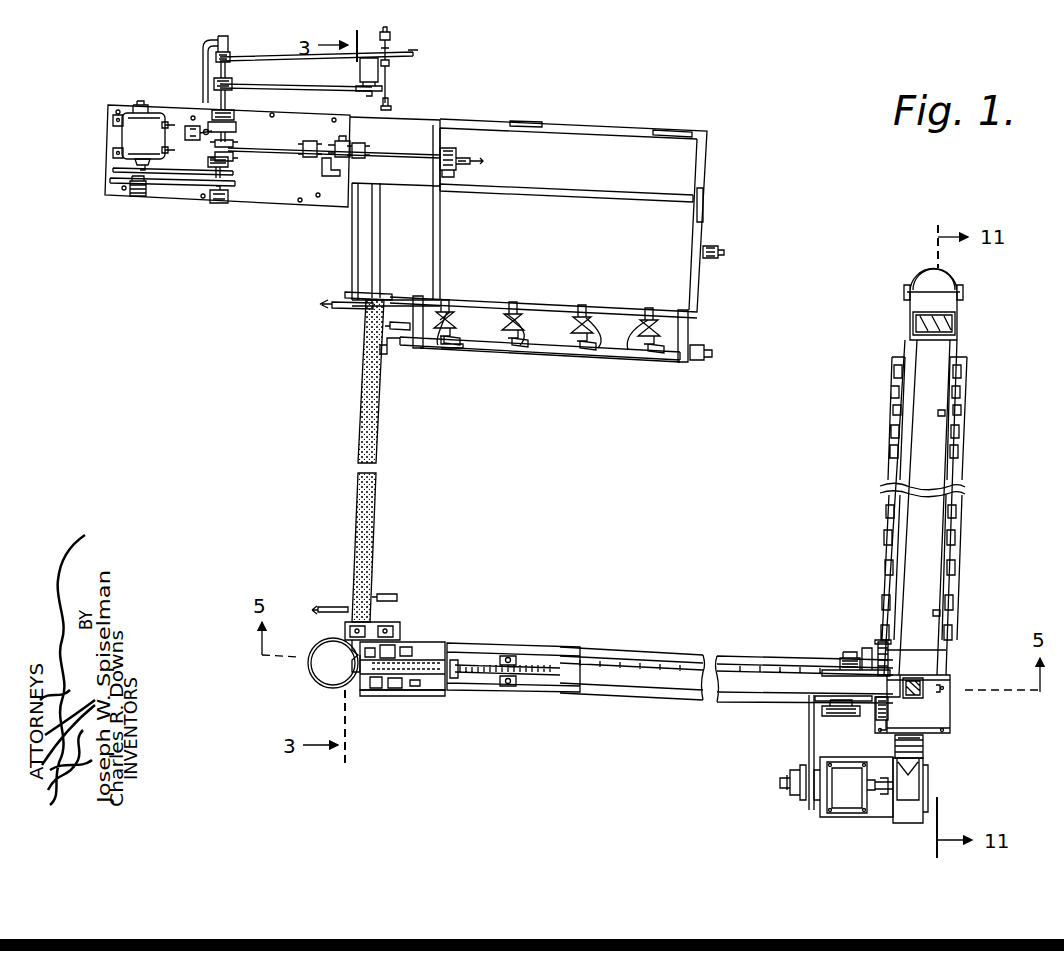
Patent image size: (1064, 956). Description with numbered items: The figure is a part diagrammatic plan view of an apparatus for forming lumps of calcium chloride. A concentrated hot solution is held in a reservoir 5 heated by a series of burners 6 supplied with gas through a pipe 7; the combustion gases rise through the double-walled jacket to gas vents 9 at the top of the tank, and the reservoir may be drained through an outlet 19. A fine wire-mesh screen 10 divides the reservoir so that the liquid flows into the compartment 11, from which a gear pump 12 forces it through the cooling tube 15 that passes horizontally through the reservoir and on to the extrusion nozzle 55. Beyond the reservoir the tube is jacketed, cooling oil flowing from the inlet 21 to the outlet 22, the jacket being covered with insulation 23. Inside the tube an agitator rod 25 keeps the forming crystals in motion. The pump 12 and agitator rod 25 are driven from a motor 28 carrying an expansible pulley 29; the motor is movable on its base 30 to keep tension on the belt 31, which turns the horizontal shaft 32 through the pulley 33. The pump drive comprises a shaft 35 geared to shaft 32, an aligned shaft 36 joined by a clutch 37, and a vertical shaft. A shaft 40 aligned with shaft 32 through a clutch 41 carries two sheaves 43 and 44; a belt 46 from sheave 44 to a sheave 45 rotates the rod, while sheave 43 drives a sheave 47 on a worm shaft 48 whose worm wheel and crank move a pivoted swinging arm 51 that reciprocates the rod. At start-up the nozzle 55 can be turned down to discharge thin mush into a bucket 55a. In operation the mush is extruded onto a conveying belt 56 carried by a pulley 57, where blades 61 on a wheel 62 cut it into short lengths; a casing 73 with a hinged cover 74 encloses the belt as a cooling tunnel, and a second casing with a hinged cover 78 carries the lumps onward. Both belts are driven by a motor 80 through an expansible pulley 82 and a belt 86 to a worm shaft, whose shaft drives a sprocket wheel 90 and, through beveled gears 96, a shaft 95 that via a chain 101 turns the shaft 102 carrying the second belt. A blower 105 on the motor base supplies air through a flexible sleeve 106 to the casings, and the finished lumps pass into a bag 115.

The reservoir 5 is at (622, 120).
The burners 6 is at (644, 312).
The pipe 7 is at (668, 352).
The gas vents 9 is at (548, 122).
The screen 10 is at (656, 186).
The compartment 11 is at (568, 165).
The pump 12 is at (465, 153).
The cooling tube 15 is at (376, 250).
The outlet 19 is at (722, 260).
The inlet 21 is at (334, 606).
The outlet 22 is at (334, 310).
The insulation 23 is at (377, 482).
The agitator rod 25 is at (390, 102).
The motor 28 is at (122, 135).
The expansible pulley 29 is at (130, 190).
The movable base 30 is at (117, 117).
The belt 31 is at (172, 186).
The horizontal shaft 32 is at (228, 172).
The pulley 33 is at (219, 204).
The shaft 35 is at (285, 154).
The aligned shaft 36 is at (374, 188).
The clutch 37 is at (341, 143).
The shaft 40 is at (223, 108).
The clutch 41 is at (232, 126).
The sheave 43 is at (223, 82).
The sheave 44 is at (223, 54).
The sheave 45 is at (392, 66).
The belt 46 is at (330, 56).
The sheave 47 is at (370, 89).
The worm shaft 48 is at (360, 70).
The pivoted swinging arm 51 is at (392, 37).
The extrusion nozzle 55 is at (433, 650).
The bucket 55a is at (325, 673).
The conveying belt 56 is at (462, 657).
The pulley 57 is at (378, 696).
The blades 61 is at (490, 664).
The wheel 62 is at (526, 690).
The casing 73 is at (668, 694).
The hinged cover 74 is at (720, 680).
The hinged cover 78 is at (930, 447).
The motor 80 is at (853, 800).
The expansible pulley 82 is at (800, 794).
The belt 86 is at (810, 745).
The sprocket wheel 90 is at (828, 712).
The shaft 95 is at (880, 648).
The beveled gears 96 is at (855, 656).
The chain 101 is at (878, 714).
The shaft 102 is at (950, 656).
The blower 105 is at (912, 800).
The flexible sleeve 106 is at (925, 748).
The bag 115 is at (958, 276).